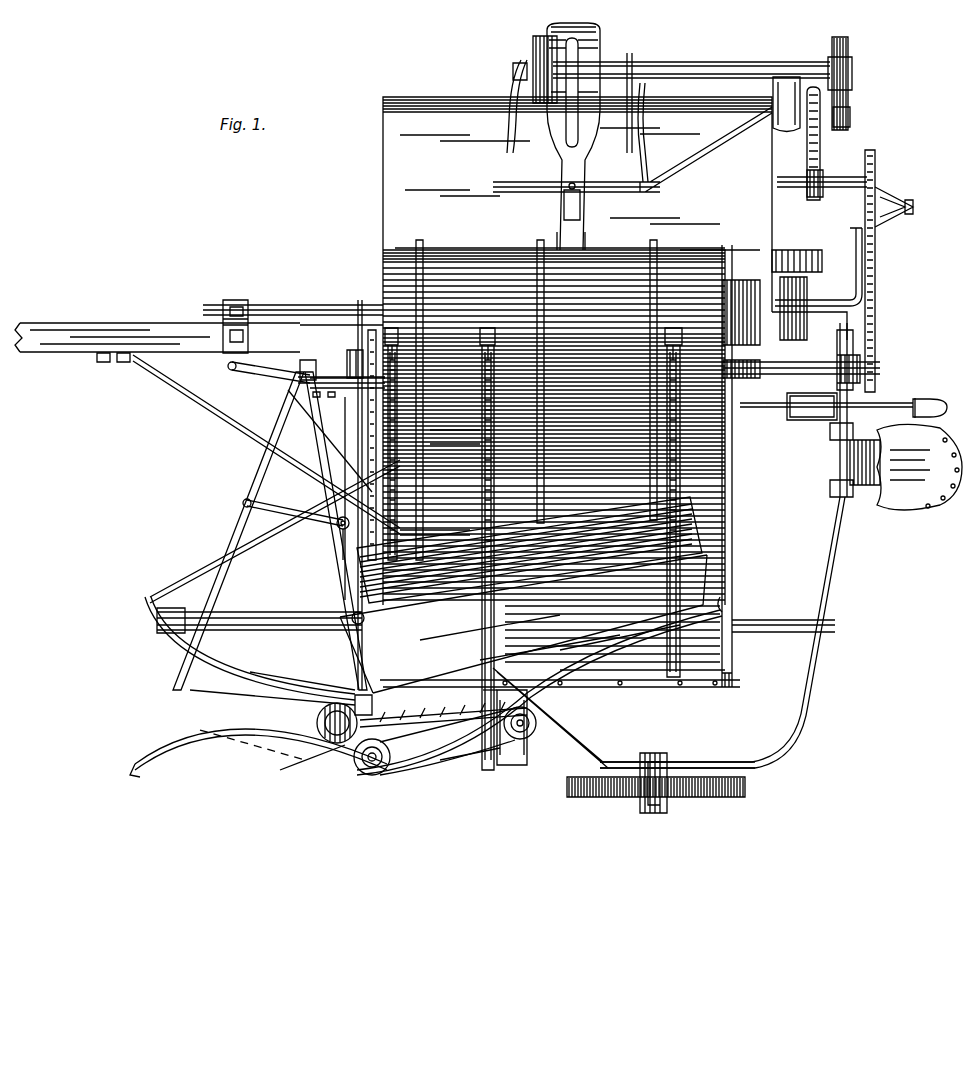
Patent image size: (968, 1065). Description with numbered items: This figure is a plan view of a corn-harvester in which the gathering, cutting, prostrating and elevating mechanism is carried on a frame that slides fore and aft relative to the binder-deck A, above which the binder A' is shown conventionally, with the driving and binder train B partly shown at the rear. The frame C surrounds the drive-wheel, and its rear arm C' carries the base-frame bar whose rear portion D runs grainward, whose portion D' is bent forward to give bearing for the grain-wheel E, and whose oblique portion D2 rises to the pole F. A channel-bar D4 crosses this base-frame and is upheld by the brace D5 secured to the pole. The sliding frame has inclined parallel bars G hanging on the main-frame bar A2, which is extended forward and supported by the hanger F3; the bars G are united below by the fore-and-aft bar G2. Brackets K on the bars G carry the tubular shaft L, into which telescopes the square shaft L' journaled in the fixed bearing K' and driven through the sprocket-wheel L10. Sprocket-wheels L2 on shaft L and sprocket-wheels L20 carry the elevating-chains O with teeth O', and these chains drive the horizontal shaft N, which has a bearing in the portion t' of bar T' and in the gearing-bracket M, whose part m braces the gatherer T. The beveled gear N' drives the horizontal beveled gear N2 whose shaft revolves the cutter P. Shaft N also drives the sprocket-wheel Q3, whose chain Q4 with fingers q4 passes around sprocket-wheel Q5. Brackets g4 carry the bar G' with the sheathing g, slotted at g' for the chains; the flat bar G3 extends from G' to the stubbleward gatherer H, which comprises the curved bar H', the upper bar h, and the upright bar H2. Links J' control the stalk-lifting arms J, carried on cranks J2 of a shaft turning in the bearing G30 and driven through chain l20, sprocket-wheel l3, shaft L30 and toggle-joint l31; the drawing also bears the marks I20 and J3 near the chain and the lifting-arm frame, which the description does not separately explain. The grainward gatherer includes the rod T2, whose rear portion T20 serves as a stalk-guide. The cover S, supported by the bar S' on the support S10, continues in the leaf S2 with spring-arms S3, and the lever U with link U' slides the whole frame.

The binder-deck A is at (577, 351).
The binder A' is at (577, 136).
The bar of the main frame A2 is at (318, 305).
The driving and binder train B is at (820, 118).
The drive-wheel frame C is at (841, 267).
The rear rigid arm C' is at (840, 410).
The rear portion of frame-bar D is at (730, 632).
The bent-forward portion of frame-bar D' is at (677, 752).
The oblique portion of frame-bar D2 is at (575, 745).
The channel-bar D4 is at (770, 633).
The brace D5 is at (222, 562).
The grain-wheel E is at (700, 792).
The pole or tongue F is at (60, 352).
The hanger F3 is at (236, 300).
The inclined parallel bars G is at (526, 466).
The fore-and-aft bar G' is at (347, 400).
The fore-and-aft bar G2 is at (735, 690).
The flat bar G3 is at (358, 583).
The bearing G30 is at (345, 530).
The stubbleward stalk-gatherer H is at (249, 648).
The flat iron bar of stubbleward gatherer H' is at (259, 633).
The nearly-upright bar H2 is at (345, 672).
The upper bar of gatherer h is at (228, 680).
The chain I20 is at (420, 733).
The stalk-lifting arms J is at (270, 525).
The links J' is at (269, 383).
The obliquely-situated cranks J2 is at (343, 515).
The brace J3 is at (300, 515).
The brackets K is at (537, 365).
The fixed bearing K' is at (872, 360).
The tubular shaft L is at (791, 416).
The shaft L' is at (801, 379).
The sprocket-wheels L2 is at (665, 345).
The sprocket-wheel L10 is at (885, 400).
The sprocket-wheels L20 is at (665, 655).
The short horizontal shaft L30 is at (435, 525).
The sprocket-wheel l3 is at (350, 523).
The chain l20 is at (451, 446).
The toggle-joint l31 is at (393, 566).
The gearing-bracket M is at (318, 720).
The part of gearing-bracket m is at (335, 745).
The horizontal shaft N is at (443, 706).
The beveled gear N' is at (382, 683).
The horizontal beveled gear N2 is at (300, 768).
The elevating-chains O is at (519, 459).
The teeth O' is at (561, 400).
The cutter P is at (268, 752).
The sprocket-wheel Q3 is at (540, 722).
The chain Q4 is at (525, 742).
The fingers q4 is at (470, 760).
The sprocket-wheel Q5 is at (372, 775).
The cover S is at (523, 624).
The bar S' is at (543, 570).
The leaf S2 is at (529, 550).
The spring-arms S3 is at (680, 500).
The upwardly-projecting support S10 is at (350, 616).
The grainward gatherer T is at (128, 748).
The bar of grainward gatherer T' is at (311, 774).
The rod or bar T2 is at (195, 735).
The stalk-guide portion T20 is at (620, 660).
The grainward portion of bar T' t' is at (493, 678).
The lever U is at (932, 400).
The link U' is at (866, 460).
The sheathing g is at (554, 427).
The slots g' is at (548, 487).
The upwardly-projecting brackets g4 is at (735, 405).